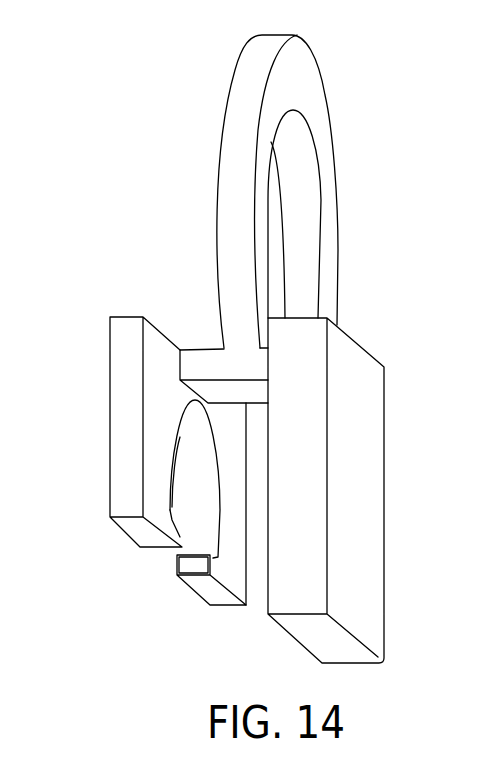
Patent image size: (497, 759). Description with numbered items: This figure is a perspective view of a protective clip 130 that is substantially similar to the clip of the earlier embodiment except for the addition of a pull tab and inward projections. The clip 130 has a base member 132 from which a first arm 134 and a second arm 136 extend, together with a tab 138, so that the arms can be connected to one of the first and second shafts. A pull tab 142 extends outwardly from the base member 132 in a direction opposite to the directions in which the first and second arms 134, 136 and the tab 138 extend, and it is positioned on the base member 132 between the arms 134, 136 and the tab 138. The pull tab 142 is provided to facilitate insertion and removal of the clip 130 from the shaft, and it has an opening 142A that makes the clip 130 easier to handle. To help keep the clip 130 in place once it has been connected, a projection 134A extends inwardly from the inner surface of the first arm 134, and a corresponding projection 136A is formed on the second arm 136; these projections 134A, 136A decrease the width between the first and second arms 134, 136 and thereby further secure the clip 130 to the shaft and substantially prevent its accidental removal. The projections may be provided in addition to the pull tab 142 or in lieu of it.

The protective clip 130 is at (252, 349).
The base member 132 is at (198, 350).
The first arm 134 is at (108, 403).
The projection 134A is at (172, 491).
The second arm 136 is at (198, 594).
The second block slot 136A is at (187, 565).
The tab 138 is at (360, 345).
The pull tab 142 is at (325, 94).
The opening 142A is at (268, 217).